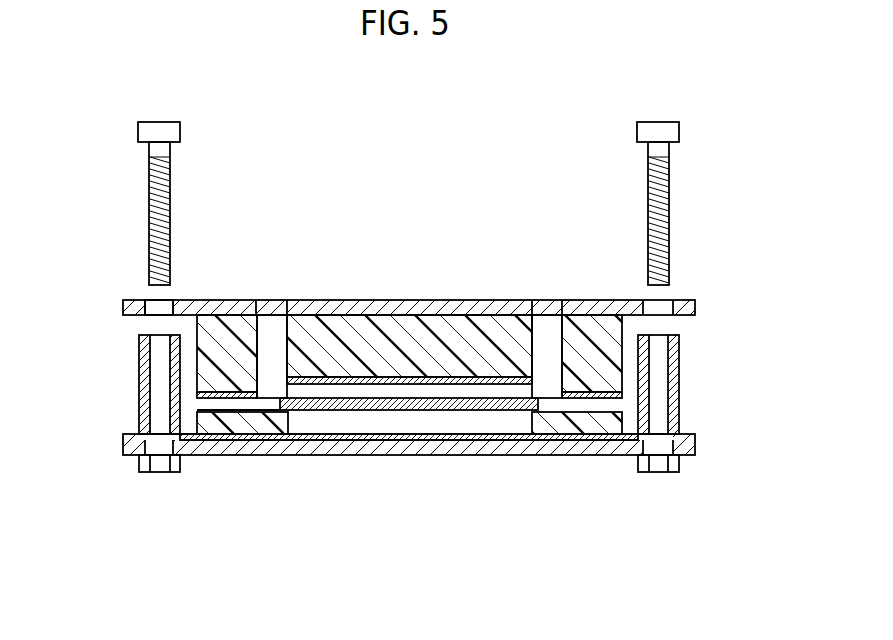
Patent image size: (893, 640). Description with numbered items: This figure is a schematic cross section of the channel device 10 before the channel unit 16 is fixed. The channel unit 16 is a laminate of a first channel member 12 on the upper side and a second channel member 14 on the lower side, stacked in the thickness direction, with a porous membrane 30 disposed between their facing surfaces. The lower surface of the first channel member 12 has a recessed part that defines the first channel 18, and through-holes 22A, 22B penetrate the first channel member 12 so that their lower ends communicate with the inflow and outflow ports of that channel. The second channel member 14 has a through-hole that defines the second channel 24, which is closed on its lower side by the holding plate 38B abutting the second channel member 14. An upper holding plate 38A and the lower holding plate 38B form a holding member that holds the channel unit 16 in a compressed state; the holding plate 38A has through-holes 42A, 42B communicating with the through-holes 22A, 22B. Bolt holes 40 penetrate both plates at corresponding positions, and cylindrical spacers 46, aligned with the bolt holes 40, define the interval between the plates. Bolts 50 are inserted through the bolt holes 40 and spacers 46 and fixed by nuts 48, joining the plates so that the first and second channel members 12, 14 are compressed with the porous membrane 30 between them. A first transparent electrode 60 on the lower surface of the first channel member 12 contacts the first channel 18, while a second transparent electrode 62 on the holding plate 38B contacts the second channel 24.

The channel device 10 is at (703, 119).
The first channel member 12 is at (215, 385).
The second channel member 14 is at (247, 425).
The channel unit 16 is at (242, 474).
The first channel 18 is at (470, 393).
The through-hole 22A is at (283, 335).
The through-hole 22B is at (548, 335).
The second channel 24 is at (412, 422).
The porous membrane 30 is at (345, 415).
The holding plate 38A is at (355, 307).
The holding plate 38B is at (517, 445).
The bolt hole 40 is at (152, 304).
The through-hole 42A is at (266, 300).
The through-hole 42B is at (554, 305).
The spacer 46 is at (142, 374).
The nut 48 is at (672, 462).
The bolt 50 is at (162, 132).
The first transparent electrode 60 is at (603, 412).
The second transparent electrode 62 is at (565, 418).